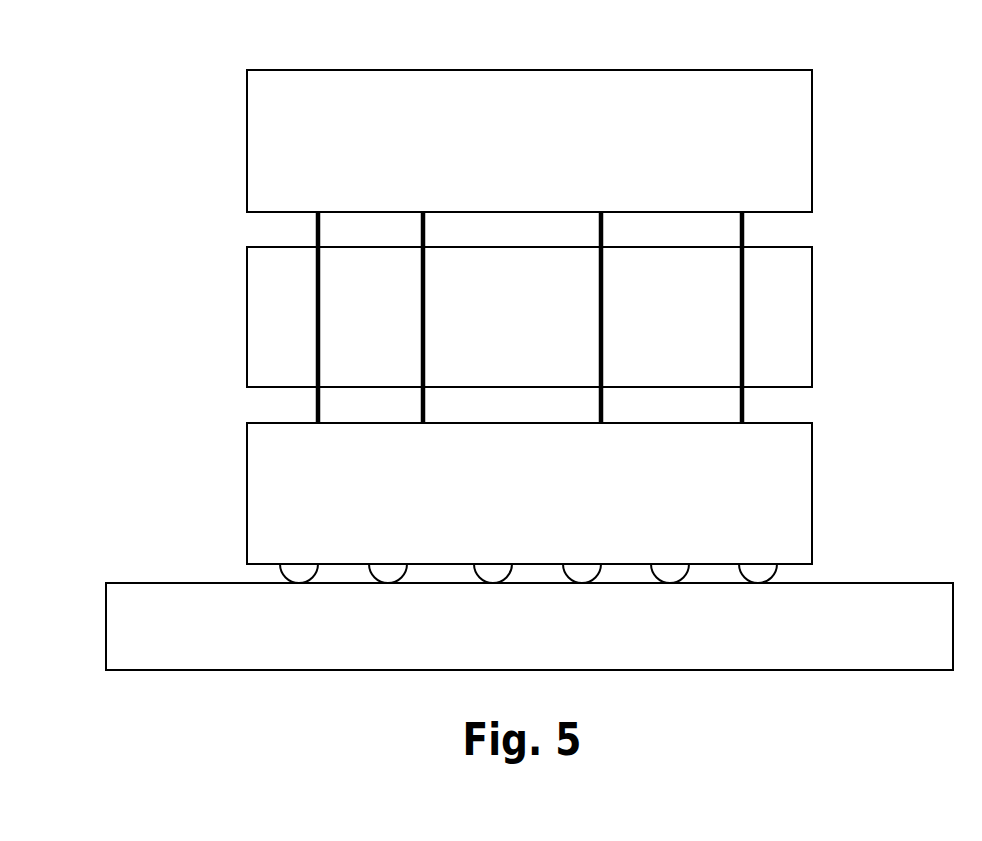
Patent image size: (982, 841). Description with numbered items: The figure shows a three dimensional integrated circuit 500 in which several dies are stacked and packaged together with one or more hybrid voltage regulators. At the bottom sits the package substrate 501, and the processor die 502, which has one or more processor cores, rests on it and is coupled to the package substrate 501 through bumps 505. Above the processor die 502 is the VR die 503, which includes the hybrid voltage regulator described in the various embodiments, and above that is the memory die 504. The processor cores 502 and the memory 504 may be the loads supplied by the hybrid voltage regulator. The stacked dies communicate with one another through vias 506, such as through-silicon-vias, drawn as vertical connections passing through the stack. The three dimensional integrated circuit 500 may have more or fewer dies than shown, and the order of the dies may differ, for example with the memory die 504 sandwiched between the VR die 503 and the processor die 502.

The three dimensional integrated circuit 500 is at (505, 33).
The package substrate 501 is at (652, 646).
The processor die 502 is at (510, 518).
The VR die 503 is at (510, 341).
The memory die 504 is at (510, 165).
The bumps 505 is at (305, 572).
The vias 506 is at (315, 347).